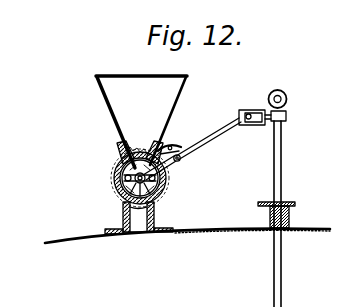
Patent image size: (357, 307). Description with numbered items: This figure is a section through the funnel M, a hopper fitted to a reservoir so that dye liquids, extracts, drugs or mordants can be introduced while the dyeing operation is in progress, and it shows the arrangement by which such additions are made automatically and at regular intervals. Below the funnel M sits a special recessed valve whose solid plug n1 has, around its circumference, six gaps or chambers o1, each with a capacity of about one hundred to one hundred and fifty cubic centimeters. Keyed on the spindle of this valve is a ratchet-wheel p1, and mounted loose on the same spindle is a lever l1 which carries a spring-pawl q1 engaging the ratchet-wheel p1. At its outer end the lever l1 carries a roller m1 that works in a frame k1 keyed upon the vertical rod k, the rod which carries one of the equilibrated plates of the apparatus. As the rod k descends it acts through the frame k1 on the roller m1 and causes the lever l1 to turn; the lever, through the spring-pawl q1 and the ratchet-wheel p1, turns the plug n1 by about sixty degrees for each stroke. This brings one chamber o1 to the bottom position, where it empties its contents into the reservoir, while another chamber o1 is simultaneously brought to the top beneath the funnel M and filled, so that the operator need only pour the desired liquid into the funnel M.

The funnel M is at (141, 122).
The gaps or chambers o1 is at (172, 197).
The plug n1 is at (118, 182).
The ratchet-wheel p1 is at (123, 193).
The spring-pawl q1 is at (170, 148).
The lever l1 is at (213, 141).
The frame k1 is at (263, 127).
The roller m1 is at (250, 110).
The rod k is at (282, 173).